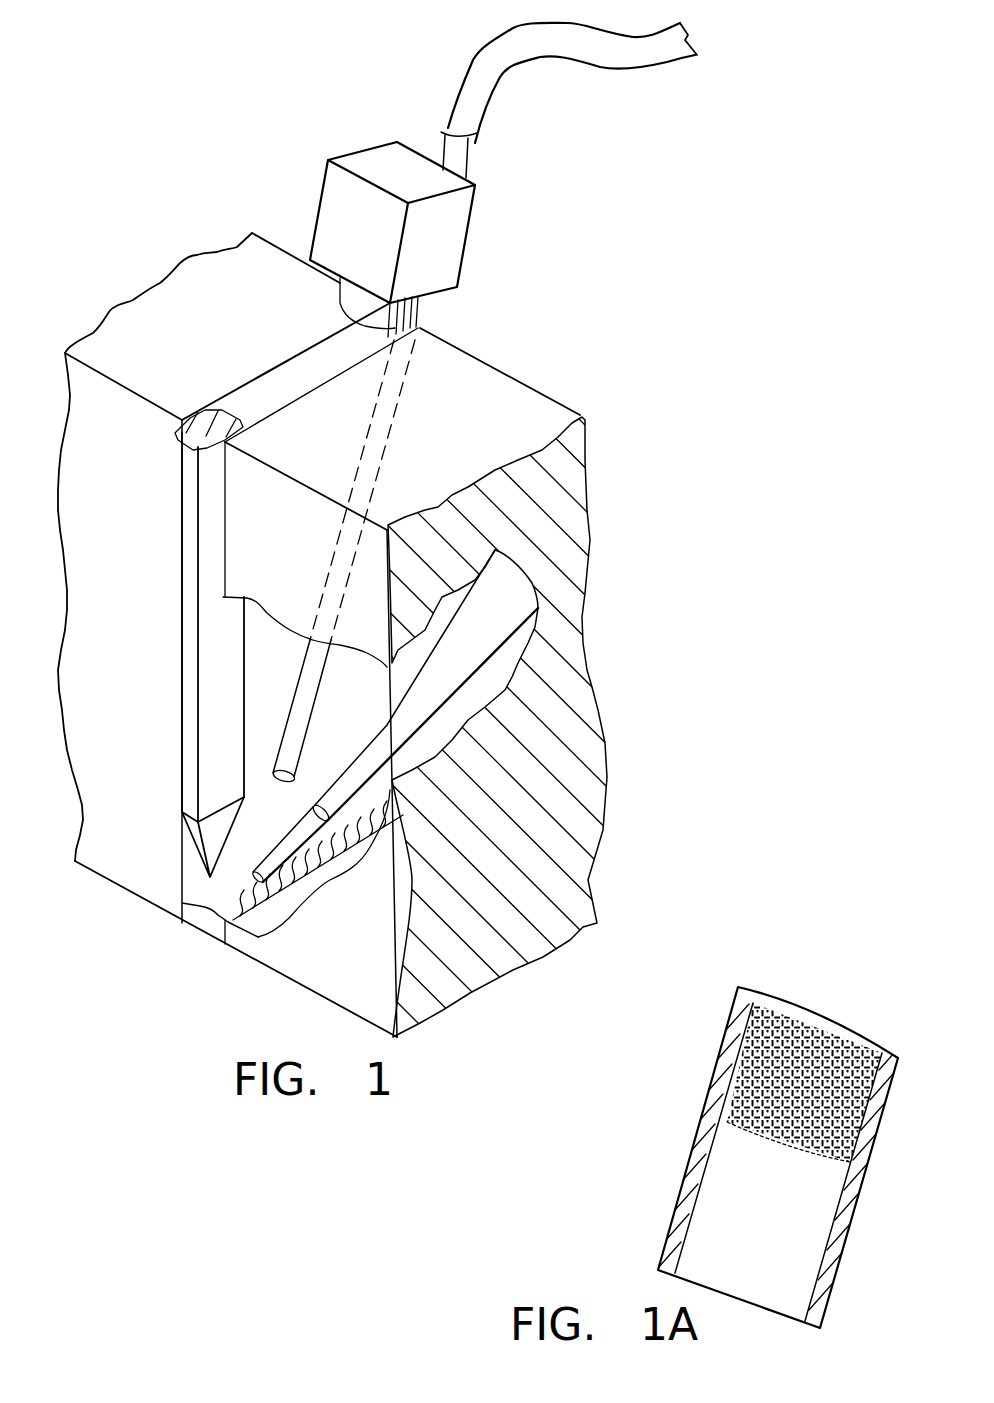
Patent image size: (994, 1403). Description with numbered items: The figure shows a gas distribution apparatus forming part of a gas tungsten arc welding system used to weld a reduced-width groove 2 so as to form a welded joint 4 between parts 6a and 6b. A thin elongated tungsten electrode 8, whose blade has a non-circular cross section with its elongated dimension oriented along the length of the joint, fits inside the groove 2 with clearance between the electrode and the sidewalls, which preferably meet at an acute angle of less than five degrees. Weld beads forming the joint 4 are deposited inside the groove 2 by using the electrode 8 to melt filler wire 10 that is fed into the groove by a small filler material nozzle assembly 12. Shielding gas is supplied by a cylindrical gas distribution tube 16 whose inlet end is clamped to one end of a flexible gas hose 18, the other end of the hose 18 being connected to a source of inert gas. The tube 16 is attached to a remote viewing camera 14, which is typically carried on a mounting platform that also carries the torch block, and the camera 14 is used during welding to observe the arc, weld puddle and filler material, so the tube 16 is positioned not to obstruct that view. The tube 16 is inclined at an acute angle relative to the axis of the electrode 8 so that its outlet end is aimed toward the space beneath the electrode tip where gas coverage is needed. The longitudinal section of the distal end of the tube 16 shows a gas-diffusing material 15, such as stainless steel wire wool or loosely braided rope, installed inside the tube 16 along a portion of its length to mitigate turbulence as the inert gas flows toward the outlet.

In FIG. 1, the reduced-width groove 2 is at (308, 372).
In FIG. 1, the welded joint 4 is at (205, 924).
In FIG. 1, the part 6a is at (128, 872).
In FIG. 1, the part 6b is at (318, 975).
In FIG. 1, the tungsten electrode 8 is at (183, 725).
In FIG. 1, the filler wire 10 is at (278, 855).
In FIG. 1, the filler material nozzle assembly 12 is at (515, 620).
In FIG. 1, the remote viewing camera 14 is at (468, 258).
In FIG. 1A, the gas-diffusing material 15 is at (753, 1085).
In FIG. 1, the cylindrical gas distribution tube 16 is at (297, 742).
In FIG. 1A, the cylindrical gas distribution tube 16 is at (687, 1195).
In FIG. 1, the flexible gas hose 18 is at (610, 53).